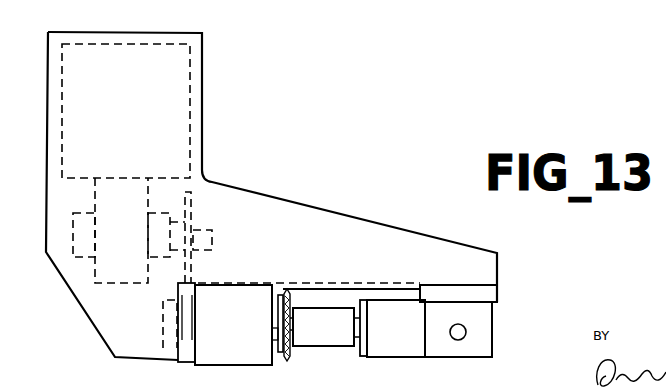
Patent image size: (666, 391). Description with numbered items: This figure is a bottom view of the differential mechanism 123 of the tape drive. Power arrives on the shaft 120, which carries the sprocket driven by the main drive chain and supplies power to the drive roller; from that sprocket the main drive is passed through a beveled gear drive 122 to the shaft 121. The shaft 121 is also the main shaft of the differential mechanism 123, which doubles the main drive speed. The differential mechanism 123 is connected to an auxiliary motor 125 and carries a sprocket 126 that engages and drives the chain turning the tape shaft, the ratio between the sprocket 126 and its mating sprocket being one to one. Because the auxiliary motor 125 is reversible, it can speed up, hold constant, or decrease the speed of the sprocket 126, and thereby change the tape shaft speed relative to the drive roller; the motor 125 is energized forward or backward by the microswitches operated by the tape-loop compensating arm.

The shaft 120 is at (466, 329).
The shaft 121 is at (314, 338).
The beveled gear drive 122 is at (440, 350).
The differential mechanism 123 is at (216, 358).
The auxiliary motor 125 is at (188, 150).
The sprocket 126 is at (286, 297).